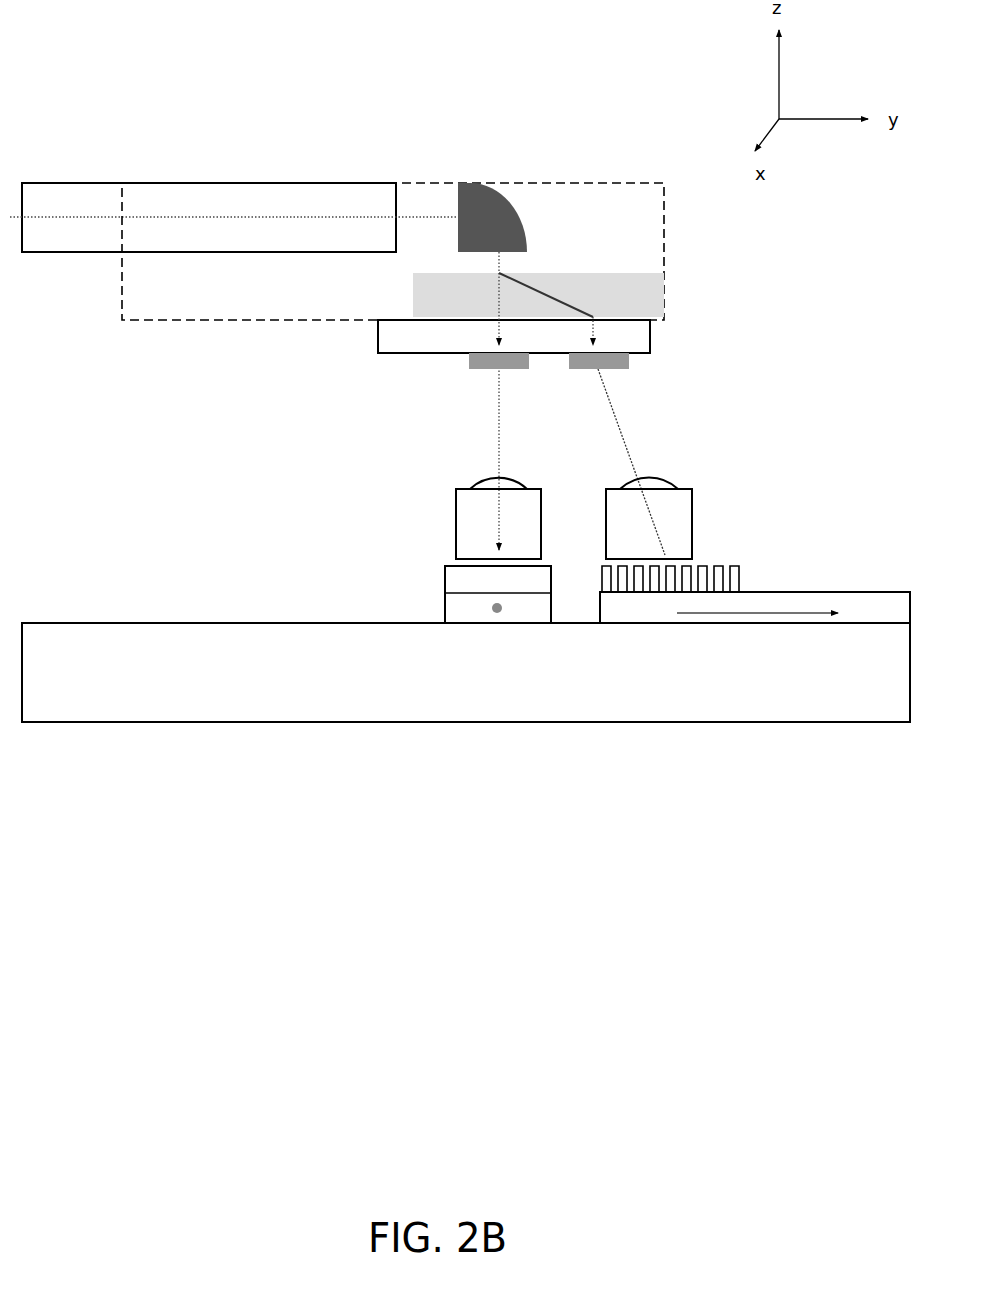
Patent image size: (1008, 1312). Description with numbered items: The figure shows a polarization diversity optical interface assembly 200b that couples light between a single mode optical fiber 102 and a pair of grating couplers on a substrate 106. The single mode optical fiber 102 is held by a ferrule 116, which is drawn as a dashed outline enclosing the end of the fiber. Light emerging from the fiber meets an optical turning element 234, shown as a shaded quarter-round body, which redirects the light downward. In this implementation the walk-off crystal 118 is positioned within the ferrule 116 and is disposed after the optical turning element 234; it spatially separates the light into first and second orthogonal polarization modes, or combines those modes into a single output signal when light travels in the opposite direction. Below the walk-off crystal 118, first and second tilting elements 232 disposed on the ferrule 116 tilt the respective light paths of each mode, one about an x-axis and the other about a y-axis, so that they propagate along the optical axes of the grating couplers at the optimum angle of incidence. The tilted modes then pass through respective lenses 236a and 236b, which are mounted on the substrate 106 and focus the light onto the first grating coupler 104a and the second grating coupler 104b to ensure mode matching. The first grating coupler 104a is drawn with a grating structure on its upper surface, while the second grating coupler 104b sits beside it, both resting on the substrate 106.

The polarization diversity optical interface assembly 200b is at (157, 62).
The single mode optical fiber 102 is at (93, 207).
The ferrule 116 is at (148, 320).
The optical turning element 234 is at (503, 207).
The walk-off crystal 118 is at (653, 290).
The tilting elements 232 is at (532, 361).
The lens 236a is at (685, 497).
The lens 236b is at (460, 487).
The first grating coupler 104a is at (731, 567).
The second grating coupler 104b is at (445, 593).
The substrate 106 is at (258, 721).